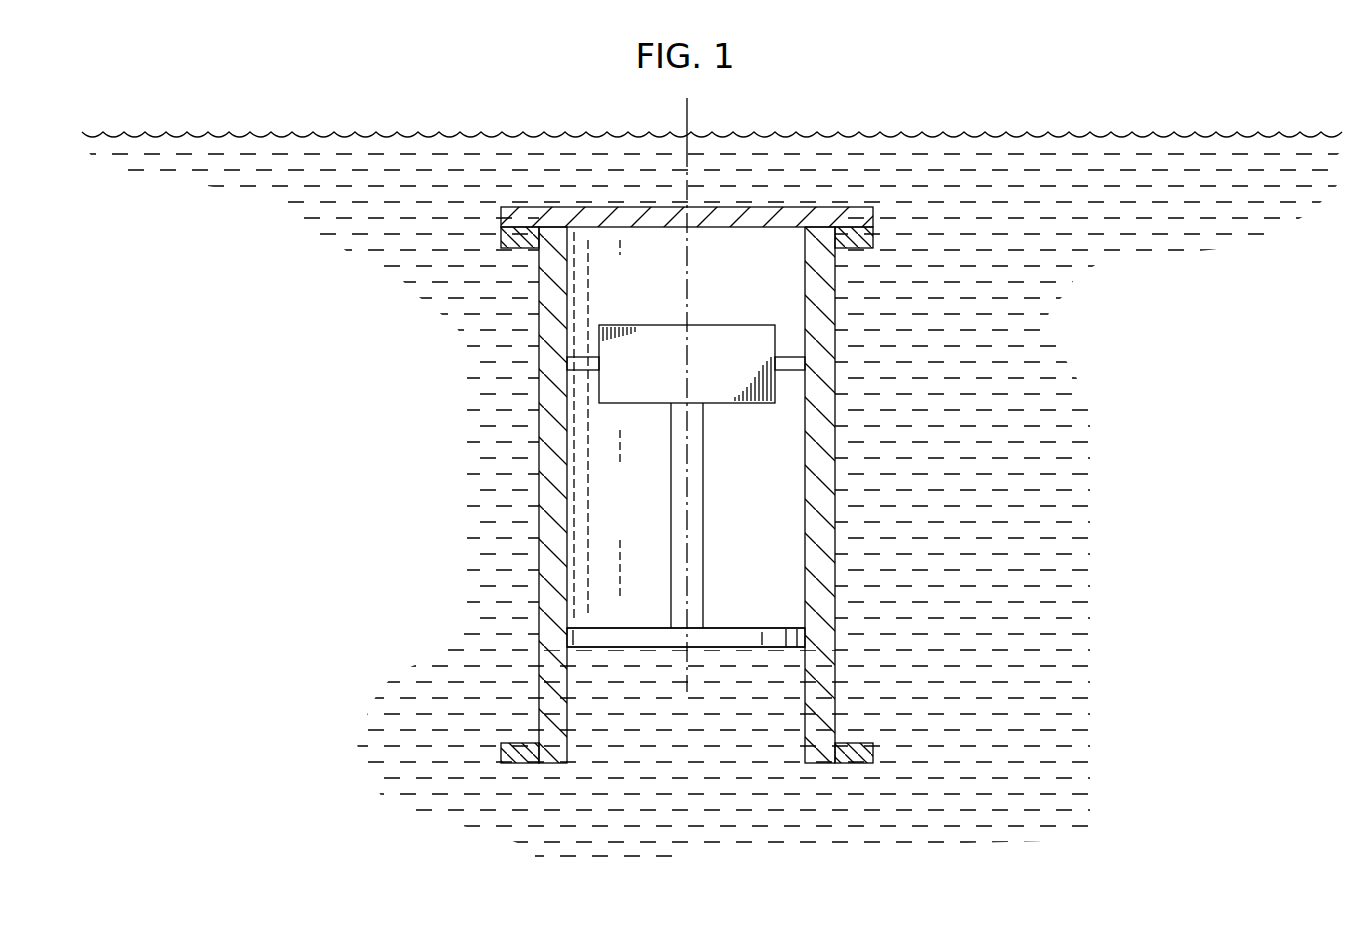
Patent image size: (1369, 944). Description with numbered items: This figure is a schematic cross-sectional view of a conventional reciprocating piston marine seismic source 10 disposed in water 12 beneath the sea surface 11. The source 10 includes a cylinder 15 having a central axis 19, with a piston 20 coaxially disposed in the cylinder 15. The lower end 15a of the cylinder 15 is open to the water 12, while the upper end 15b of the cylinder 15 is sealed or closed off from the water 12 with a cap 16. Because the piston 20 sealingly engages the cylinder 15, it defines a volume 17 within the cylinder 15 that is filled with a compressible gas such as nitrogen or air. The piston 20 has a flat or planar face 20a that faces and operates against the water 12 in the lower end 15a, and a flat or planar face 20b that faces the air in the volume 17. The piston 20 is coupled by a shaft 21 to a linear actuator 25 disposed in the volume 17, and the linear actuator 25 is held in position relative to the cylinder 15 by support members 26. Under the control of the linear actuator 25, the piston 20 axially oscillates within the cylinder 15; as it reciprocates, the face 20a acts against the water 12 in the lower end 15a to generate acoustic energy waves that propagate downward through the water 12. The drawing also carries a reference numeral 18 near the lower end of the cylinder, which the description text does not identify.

The reciprocating piston marine seismic source 10 is at (314, 84).
The sea surface 11 is at (1012, 135).
The water 12 is at (974, 494).
The cylinder 15 is at (836, 409).
The lower end 15a is at (837, 725).
The upper end 15b is at (538, 258).
The cap 16 is at (793, 207).
The volume 17 is at (741, 470).
The base 18 is at (877, 754).
The central axis 19 is at (685, 118).
The piston 20 is at (752, 649).
The face 20a is at (636, 648).
The face 20b is at (738, 628).
The shaft 21 is at (670, 516).
The linear actuator 25 is at (730, 325).
The support members 26 is at (582, 357).